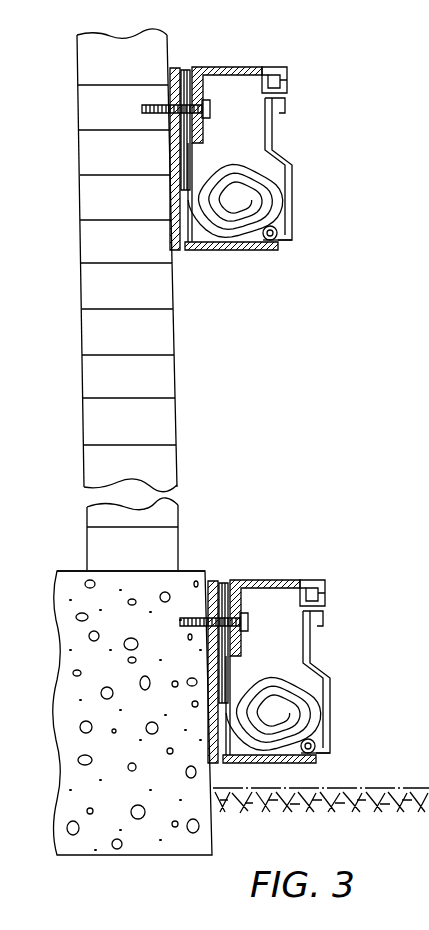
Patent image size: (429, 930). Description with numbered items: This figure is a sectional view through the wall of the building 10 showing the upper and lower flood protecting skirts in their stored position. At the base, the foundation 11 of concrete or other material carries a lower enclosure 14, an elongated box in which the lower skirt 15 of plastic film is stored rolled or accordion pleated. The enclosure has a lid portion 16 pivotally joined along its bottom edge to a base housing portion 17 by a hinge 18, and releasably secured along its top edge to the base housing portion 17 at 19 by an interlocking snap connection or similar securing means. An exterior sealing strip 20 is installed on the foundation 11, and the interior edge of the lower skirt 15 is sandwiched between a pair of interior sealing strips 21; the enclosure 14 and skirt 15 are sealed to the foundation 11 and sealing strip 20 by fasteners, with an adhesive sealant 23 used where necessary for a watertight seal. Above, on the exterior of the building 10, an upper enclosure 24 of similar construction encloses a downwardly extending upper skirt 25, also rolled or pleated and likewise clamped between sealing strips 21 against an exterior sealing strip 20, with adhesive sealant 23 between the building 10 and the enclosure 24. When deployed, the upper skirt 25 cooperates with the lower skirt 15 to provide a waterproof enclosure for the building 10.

The building 10 is at (176, 375).
The foundation 11 is at (70, 727).
The lower enclosure 14 is at (336, 721).
The lower skirt 15 is at (266, 686).
The lid portion 16 is at (272, 128).
The base housing portion 17 is at (262, 764).
The hinge 18 is at (279, 242).
The securing means 19 is at (282, 73).
The exterior sealing strip 20 is at (175, 67).
The interior sealing strips 21 is at (190, 75).
The adhesive sealant 23 is at (183, 252).
The upper enclosure 24 is at (302, 199).
The upper skirt 25 is at (236, 250).